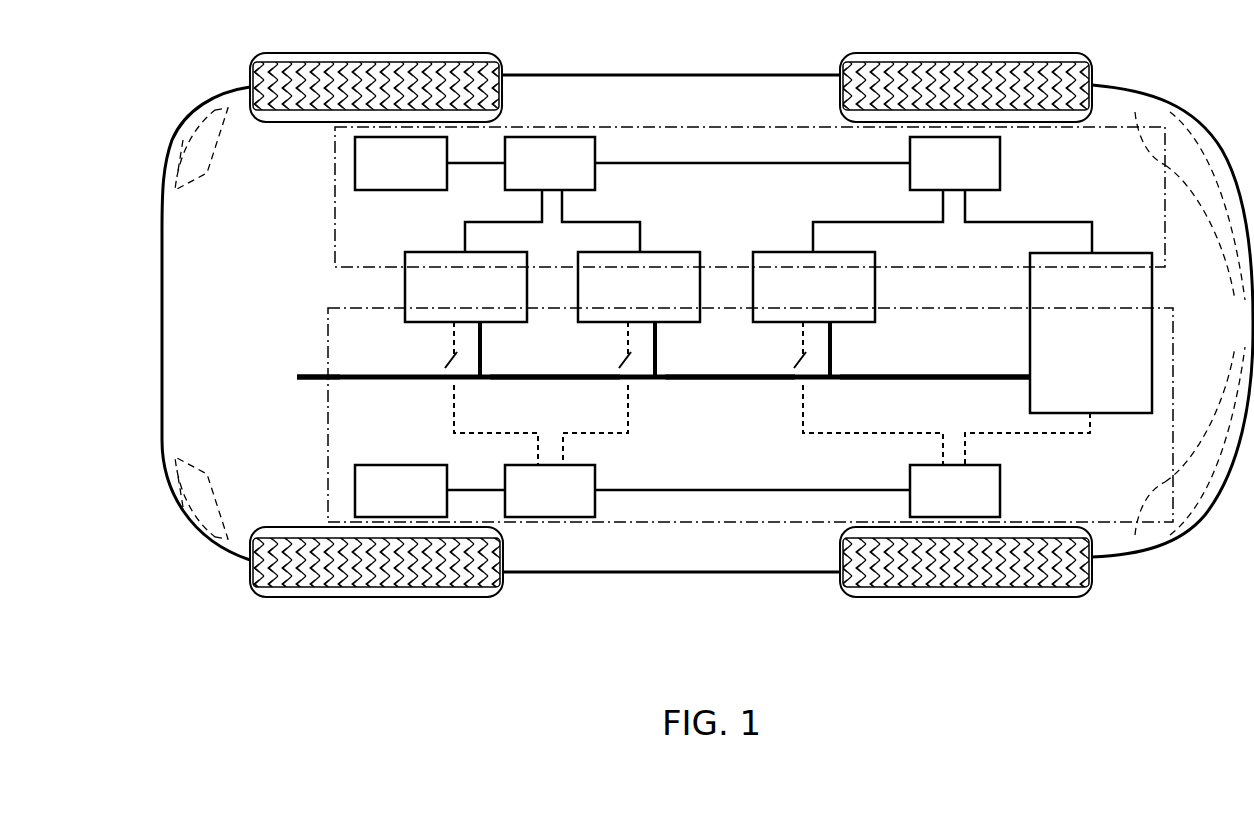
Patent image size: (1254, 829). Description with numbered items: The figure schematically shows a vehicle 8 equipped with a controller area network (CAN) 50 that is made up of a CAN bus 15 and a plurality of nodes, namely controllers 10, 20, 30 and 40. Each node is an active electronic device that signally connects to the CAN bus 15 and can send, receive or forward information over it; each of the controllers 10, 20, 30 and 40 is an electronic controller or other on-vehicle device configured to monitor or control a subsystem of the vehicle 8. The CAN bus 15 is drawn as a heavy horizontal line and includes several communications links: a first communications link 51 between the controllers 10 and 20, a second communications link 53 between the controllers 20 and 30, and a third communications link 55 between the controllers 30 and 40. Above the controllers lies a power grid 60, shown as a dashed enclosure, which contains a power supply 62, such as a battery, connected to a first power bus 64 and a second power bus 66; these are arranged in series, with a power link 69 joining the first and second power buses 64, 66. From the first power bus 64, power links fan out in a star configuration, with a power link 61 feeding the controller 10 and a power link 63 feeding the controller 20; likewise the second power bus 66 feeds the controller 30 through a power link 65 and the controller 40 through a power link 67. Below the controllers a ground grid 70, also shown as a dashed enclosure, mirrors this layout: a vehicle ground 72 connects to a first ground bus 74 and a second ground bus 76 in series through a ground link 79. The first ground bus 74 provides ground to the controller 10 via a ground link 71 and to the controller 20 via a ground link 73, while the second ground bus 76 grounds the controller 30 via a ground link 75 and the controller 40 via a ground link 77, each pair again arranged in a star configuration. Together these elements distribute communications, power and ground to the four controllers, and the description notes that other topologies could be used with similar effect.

The vehicle 8 is at (160, 327).
The controller 10 is at (466, 314).
The CAN bus 15 is at (917, 373).
The controller 20 is at (639, 314).
The controller 30 is at (814, 314).
The controller 40 is at (1091, 333).
The controller area network 50 is at (321, 369).
The first communications link 51 is at (578, 383).
The second communications link 53 is at (700, 383).
The third communications link 55 is at (967, 383).
The power grid 60 is at (333, 275).
The power link 61 is at (462, 236).
The power supply 62 is at (401, 163).
The power link 63 is at (644, 240).
The first power bus 64 is at (550, 163).
The power link 65 is at (865, 222).
The second power bus 66 is at (955, 163).
The power link 67 is at (1020, 222).
The power link 69 is at (733, 163).
The ground grid 70 is at (325, 449).
The ground link 71 is at (452, 402).
The vehicle ground 72 is at (401, 491).
The ground link 73 is at (632, 418).
The first ground bus 74 is at (550, 491).
The ground link 75 is at (865, 437).
The second ground bus 76 is at (955, 491).
The ground link 77 is at (1025, 437).
The ground link 79 is at (678, 490).